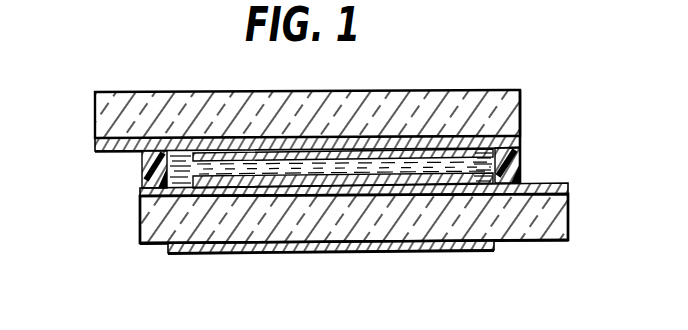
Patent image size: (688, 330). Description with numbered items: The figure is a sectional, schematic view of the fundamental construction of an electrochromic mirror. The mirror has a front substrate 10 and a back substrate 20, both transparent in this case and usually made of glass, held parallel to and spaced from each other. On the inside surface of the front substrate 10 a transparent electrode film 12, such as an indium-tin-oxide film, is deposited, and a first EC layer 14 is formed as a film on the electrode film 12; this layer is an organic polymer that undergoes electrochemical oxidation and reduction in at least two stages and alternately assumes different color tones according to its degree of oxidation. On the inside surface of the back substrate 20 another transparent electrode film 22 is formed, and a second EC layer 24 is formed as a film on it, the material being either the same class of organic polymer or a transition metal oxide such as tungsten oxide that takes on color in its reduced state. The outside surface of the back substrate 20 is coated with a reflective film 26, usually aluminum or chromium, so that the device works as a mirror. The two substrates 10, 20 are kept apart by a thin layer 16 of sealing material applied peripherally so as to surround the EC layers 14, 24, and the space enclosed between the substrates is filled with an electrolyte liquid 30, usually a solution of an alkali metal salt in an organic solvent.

The front substrate 10 is at (483, 96).
The transparent electrode film 12 is at (508, 141).
The first EC layer 14 is at (498, 152).
The thin layer of sealing material 16 is at (500, 175).
The electrolyte liquid 30 is at (140, 159).
The second EC layer 24 is at (140, 181).
The transparent electrode film 22 is at (140, 197).
The back substrate 20 is at (530, 226).
The reflective film 26 is at (437, 253).